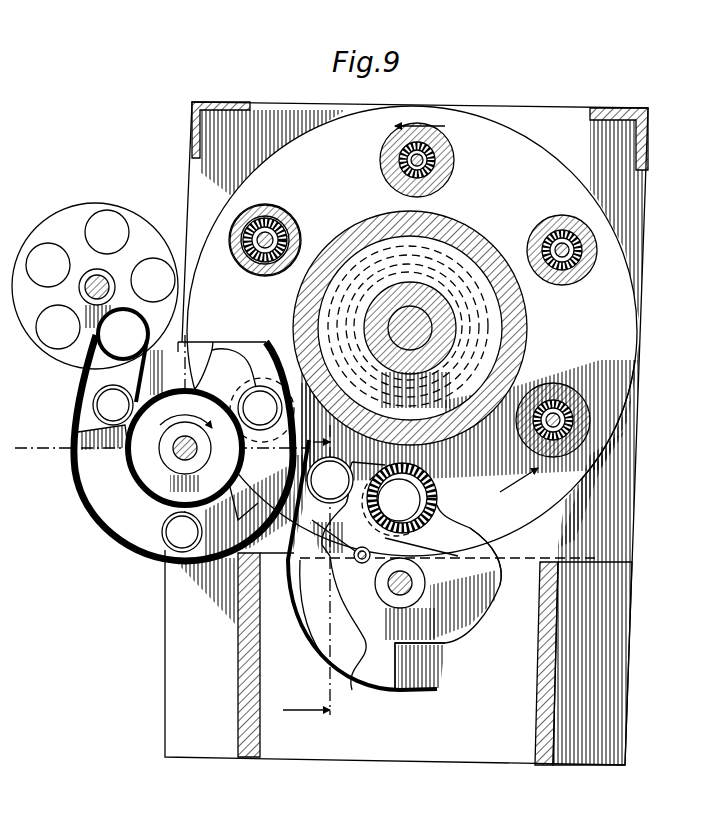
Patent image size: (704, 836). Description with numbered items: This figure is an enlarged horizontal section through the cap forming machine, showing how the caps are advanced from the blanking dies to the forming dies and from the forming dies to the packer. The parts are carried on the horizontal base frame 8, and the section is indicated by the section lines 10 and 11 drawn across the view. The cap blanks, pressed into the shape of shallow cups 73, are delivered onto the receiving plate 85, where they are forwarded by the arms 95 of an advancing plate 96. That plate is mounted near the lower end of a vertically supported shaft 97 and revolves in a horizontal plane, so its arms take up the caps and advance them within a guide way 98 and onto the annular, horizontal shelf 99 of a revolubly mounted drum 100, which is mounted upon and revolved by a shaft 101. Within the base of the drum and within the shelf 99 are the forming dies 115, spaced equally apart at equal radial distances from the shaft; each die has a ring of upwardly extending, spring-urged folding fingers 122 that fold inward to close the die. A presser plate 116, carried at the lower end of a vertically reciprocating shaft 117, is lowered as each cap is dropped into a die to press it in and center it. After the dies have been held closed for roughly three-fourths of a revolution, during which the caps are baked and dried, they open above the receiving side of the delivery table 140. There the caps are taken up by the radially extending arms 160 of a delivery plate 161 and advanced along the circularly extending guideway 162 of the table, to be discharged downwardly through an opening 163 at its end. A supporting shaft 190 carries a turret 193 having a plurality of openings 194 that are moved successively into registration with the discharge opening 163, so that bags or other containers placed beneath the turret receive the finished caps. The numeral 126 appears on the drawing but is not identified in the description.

The horizontal base frame 8 is at (600, 607).
The section line 10- 10 is at (311, 582).
The section line 11- 11 is at (156, 442).
The shallow cups 73 is at (410, 438).
The receiving plate 85 is at (337, 643).
The arms 95 is at (498, 577).
The advancing plate 96 is at (450, 576).
The vertically supported shaft 97 is at (425, 583).
The guide way 98 is at (298, 633).
The annular horizontal shelf 99 is at (598, 368).
The drum 100 is at (618, 426).
The shaft 101 is at (408, 324).
The forming dies 115 is at (286, 232).
The presser plate 116 is at (430, 528).
The vertically reciprocating shaft 117 is at (356, 560).
The folding fingers 122 is at (282, 268).
The roller 126 is at (248, 262).
The delivery table 140 is at (263, 342).
The radially extending arms 160 is at (85, 456).
The delivery plate 161 is at (153, 473).
The circularly extending guideway 162 is at (84, 398).
The opening 163 is at (108, 344).
The supporting shaft 190 is at (105, 285).
The turret 193 is at (133, 252).
The openings 194 is at (115, 227).